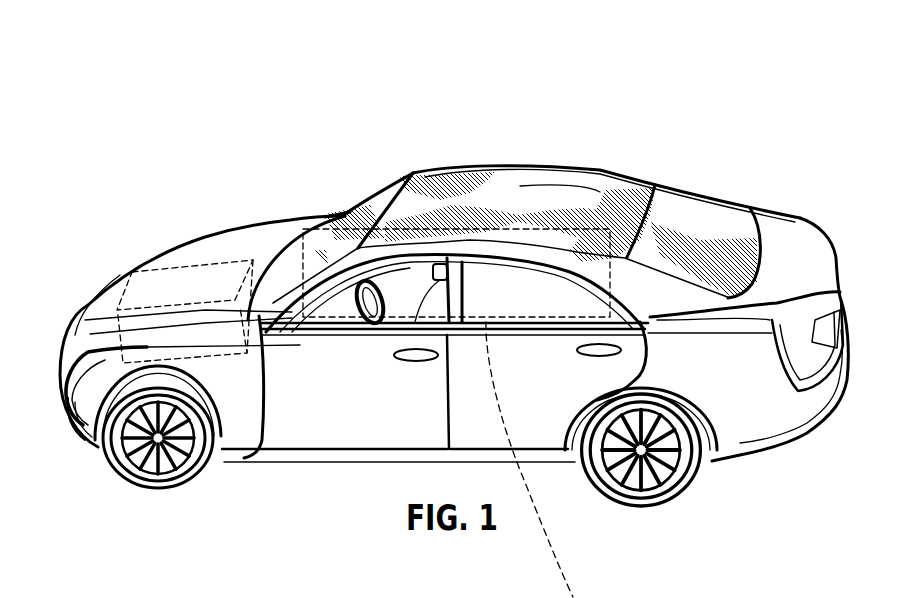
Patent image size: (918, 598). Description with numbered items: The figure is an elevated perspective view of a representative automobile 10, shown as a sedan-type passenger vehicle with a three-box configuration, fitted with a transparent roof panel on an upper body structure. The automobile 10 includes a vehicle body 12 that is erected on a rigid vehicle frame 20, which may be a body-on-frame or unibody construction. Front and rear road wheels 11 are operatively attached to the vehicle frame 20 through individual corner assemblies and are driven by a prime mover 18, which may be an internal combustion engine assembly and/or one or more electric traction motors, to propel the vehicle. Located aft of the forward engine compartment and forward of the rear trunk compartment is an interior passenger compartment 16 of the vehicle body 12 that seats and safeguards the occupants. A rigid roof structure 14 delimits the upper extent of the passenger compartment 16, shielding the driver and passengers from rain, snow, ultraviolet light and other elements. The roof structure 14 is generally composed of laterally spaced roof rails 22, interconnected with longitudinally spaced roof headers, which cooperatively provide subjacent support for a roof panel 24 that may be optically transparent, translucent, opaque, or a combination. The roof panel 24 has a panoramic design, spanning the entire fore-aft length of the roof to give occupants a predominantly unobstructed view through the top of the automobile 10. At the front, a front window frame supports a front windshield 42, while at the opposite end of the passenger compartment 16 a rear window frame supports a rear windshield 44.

The automobile 10 is at (150, 98).
The road wheels 11 is at (140, 488).
The vehicle body 12 is at (158, 248).
The roof structure 14 is at (415, 170).
The interior passenger compartment 16 is at (330, 210).
The prime mover 18 is at (120, 300).
The vehicle frame 20 is at (295, 250).
The roof rails 22 is at (525, 170).
The roof panel 24 is at (550, 182).
The front windshield 42 is at (380, 203).
The rear windshield 44 is at (697, 200).